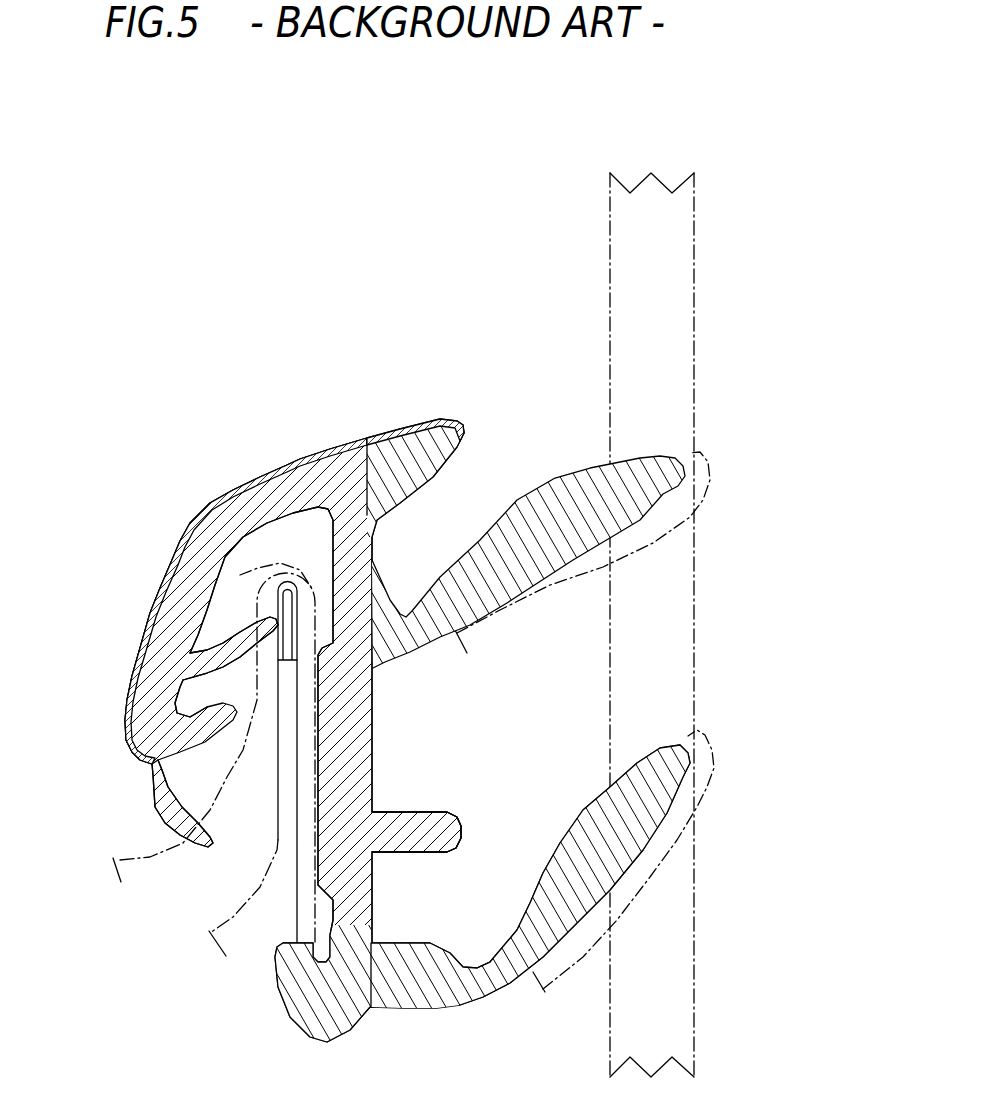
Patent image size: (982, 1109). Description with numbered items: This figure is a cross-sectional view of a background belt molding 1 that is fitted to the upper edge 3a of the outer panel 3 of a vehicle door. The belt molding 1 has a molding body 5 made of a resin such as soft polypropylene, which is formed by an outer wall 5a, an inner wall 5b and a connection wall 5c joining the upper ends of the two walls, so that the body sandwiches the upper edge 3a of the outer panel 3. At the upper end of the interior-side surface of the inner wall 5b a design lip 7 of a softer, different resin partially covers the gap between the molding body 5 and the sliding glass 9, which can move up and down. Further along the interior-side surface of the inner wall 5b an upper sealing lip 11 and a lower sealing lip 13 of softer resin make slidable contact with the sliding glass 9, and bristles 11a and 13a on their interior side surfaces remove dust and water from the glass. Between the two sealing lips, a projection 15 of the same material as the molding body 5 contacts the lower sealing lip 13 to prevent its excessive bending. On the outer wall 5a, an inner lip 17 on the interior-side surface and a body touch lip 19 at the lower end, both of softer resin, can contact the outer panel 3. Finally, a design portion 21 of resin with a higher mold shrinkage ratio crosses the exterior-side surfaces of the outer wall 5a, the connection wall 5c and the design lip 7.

The belt molding 1 is at (108, 219).
The outer panel 3 is at (153, 873).
The upper edge 3a is at (203, 610).
The molding body 5 is at (290, 296).
The outer wall 5a is at (173, 598).
The inner wall 5b is at (348, 570).
The connection wall 5c is at (238, 513).
The design lip 7 is at (394, 460).
The sliding glass 9 is at (696, 297).
The upper sealing lip 11 is at (654, 455).
The bristles 11a is at (713, 487).
The lower sealing lip 13 is at (664, 750).
The bristles 13a is at (715, 772).
The projection 15 is at (443, 818).
The inner lip 17 is at (200, 665).
The body touch lip 19 is at (158, 783).
The design portion 21 is at (428, 422).